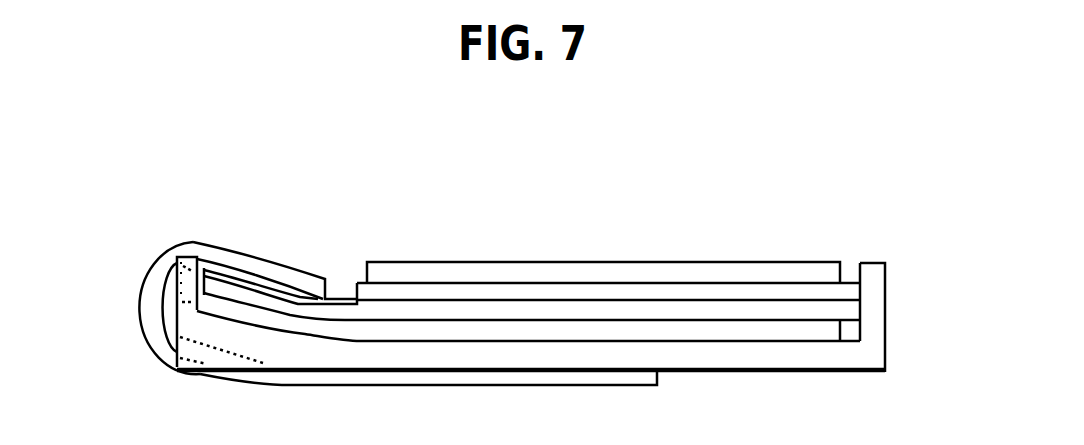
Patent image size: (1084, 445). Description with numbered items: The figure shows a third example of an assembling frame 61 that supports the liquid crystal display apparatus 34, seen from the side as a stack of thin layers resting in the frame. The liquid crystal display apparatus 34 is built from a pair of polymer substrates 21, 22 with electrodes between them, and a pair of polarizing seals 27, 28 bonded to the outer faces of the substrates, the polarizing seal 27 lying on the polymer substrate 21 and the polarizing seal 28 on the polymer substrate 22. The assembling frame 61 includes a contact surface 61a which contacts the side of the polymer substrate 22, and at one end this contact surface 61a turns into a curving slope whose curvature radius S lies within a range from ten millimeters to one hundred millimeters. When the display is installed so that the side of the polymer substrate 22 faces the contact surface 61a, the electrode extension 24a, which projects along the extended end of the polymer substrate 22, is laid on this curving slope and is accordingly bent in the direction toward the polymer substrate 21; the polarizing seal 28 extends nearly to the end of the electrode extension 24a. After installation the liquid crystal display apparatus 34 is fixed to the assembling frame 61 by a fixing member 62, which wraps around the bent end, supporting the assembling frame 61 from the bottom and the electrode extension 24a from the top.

The liquid crystal display apparatus 34 is at (560, 153).
The polymer substrate 21 is at (497, 285).
The polymer substrate 22 is at (572, 305).
The electrode extension 24a is at (337, 297).
The polarizing seal 27 is at (647, 270).
The polarizing seal 28 is at (603, 330).
The assembling frame 61 is at (727, 351).
The contact surface 61a is at (785, 333).
The fixing member 62 is at (215, 256).
The curvature radius S is at (252, 321).